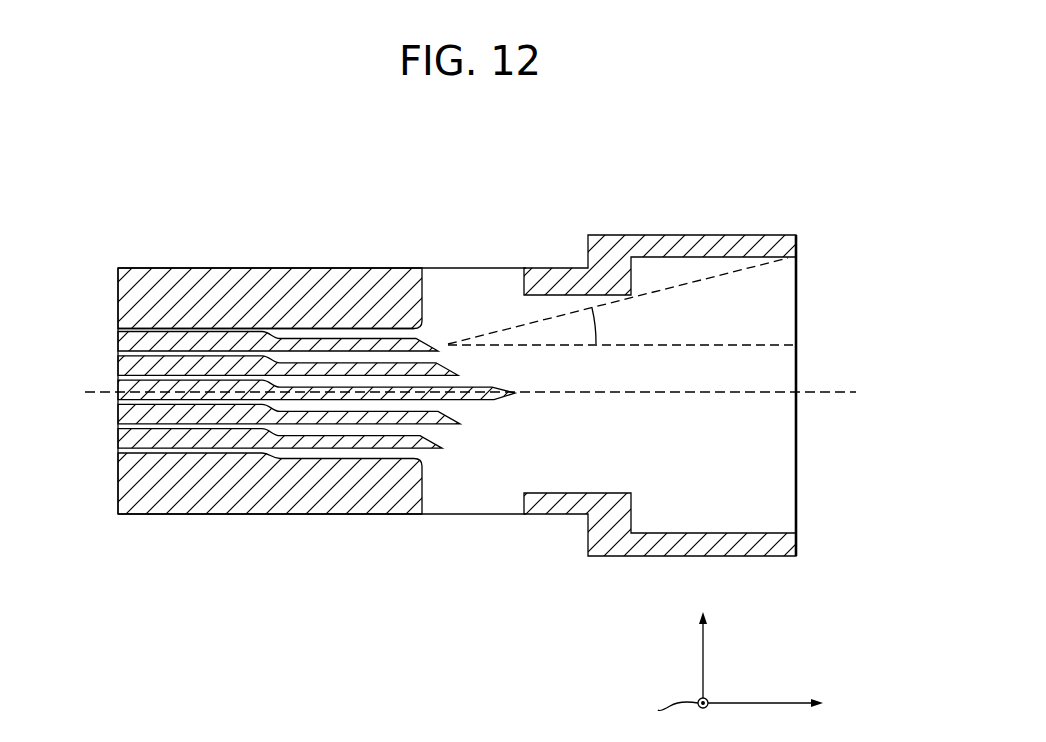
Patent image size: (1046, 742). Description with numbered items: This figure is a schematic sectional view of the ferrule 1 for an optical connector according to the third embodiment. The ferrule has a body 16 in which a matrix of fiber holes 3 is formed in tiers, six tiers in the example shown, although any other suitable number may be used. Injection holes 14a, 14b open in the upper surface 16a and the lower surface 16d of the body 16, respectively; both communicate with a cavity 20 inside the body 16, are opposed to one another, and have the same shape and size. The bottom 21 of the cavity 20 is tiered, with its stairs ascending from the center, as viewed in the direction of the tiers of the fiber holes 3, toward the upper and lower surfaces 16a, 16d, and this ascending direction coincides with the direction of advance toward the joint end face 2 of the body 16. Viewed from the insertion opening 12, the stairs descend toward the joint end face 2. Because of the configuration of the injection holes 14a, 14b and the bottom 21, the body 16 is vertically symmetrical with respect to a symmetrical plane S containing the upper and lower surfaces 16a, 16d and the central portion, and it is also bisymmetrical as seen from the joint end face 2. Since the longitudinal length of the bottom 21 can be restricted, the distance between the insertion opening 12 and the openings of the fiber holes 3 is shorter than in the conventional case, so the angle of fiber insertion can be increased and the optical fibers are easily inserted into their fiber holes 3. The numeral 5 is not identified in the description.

The ferrule for optical connector 1 is at (646, 171).
The joint end face 2 is at (117, 303).
The fiber holes 3 is at (186, 329).
The fin tip 5 is at (432, 340).
The insertion opening 12 is at (773, 304).
The injection hole 14a is at (487, 283).
The injection hole 14b is at (498, 494).
The body 16 is at (296, 267).
The upper surface 16a is at (358, 267).
The lower surface 16d is at (202, 515).
The cavity 20 is at (717, 479).
The bottom of the cavity 21 is at (451, 416).
The symmetrical plane S is at (813, 397).